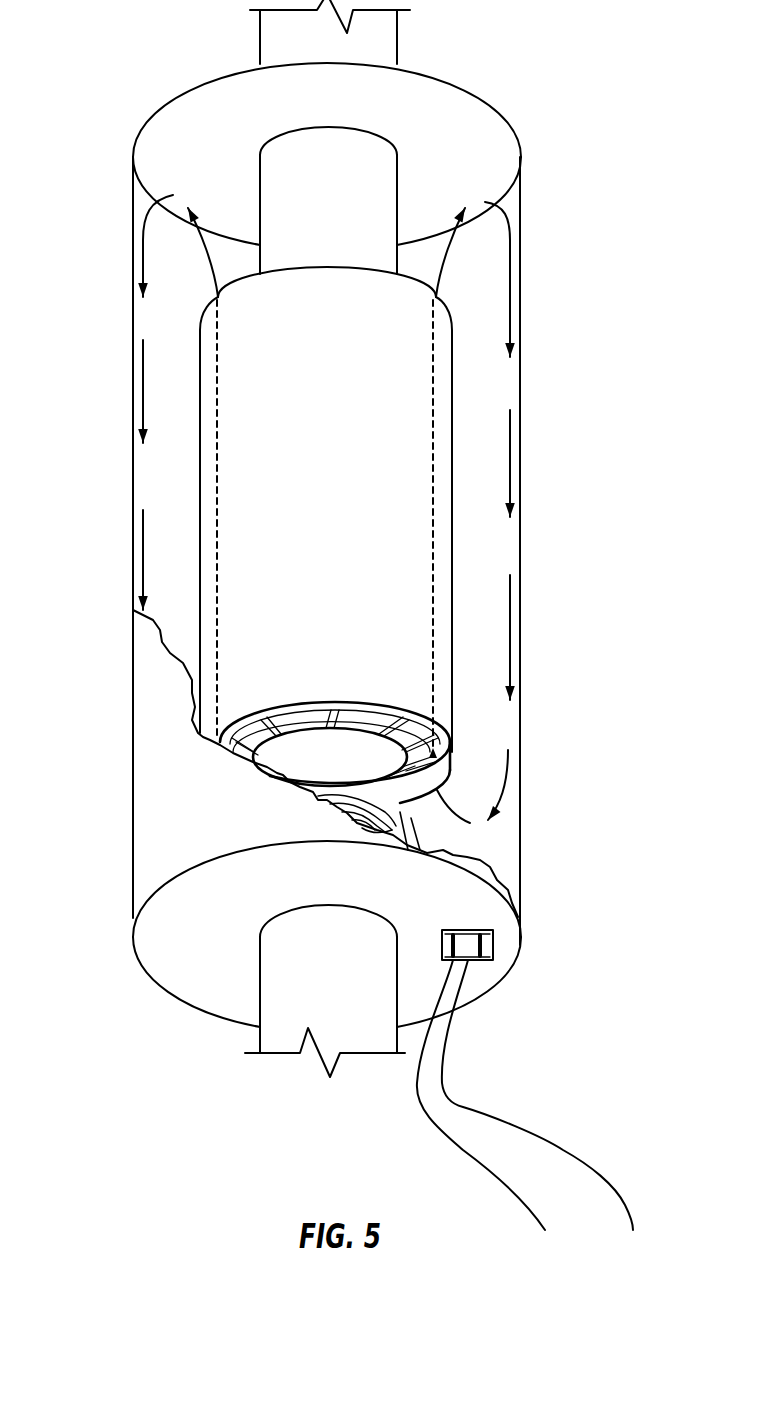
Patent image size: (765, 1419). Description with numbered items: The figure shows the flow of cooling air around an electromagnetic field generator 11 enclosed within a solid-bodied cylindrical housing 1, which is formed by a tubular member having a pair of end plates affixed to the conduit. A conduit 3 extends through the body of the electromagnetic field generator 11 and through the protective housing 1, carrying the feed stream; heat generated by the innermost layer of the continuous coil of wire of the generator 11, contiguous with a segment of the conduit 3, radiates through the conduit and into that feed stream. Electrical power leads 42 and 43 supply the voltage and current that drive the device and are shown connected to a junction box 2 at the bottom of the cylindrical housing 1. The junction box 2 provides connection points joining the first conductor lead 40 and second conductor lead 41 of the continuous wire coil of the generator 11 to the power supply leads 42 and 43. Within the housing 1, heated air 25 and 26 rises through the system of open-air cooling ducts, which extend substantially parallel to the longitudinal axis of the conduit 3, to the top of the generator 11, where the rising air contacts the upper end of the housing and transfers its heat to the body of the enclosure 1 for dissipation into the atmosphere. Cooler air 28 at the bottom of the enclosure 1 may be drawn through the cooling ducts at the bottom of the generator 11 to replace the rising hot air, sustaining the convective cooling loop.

The cylindrical housing 1 is at (142, 832).
The junction box 2 is at (493, 947).
The conduit 3 is at (337, 223).
The electromagnetic field generator 11 is at (342, 493).
The heated air 25 is at (153, 216).
The heated air 26 is at (485, 203).
The cooler air 28 is at (508, 795).
The first conductor lead 40 is at (413, 837).
The second conductor lead 41 is at (418, 846).
The electrical power lead 42 is at (450, 1137).
The electrical power lead 43 is at (513, 1128).